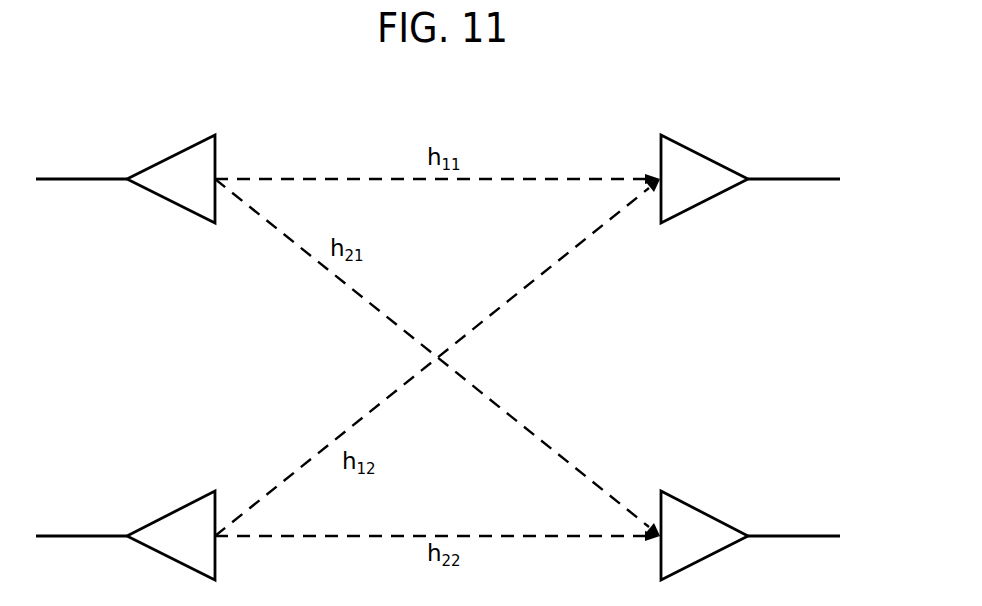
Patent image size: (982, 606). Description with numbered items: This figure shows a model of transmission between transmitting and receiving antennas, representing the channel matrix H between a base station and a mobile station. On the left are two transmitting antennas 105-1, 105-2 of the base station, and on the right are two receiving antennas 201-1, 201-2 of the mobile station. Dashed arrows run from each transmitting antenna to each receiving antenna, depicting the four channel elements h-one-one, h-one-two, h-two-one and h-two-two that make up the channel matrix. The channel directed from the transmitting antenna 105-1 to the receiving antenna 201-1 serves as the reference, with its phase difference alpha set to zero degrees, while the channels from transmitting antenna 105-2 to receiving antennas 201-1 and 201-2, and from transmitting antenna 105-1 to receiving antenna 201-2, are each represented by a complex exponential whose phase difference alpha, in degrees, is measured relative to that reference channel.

The transmitting antenna 105-1 is at (170, 157).
The transmitting antenna 105-2 is at (170, 512).
The receiving antenna 201-1 is at (705, 157).
The receiving antenna 201-2 is at (705, 512).